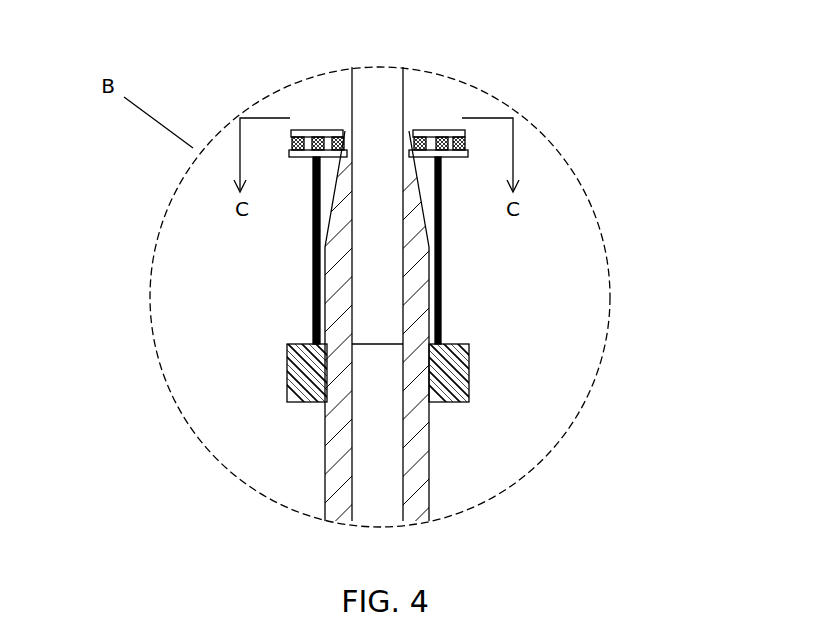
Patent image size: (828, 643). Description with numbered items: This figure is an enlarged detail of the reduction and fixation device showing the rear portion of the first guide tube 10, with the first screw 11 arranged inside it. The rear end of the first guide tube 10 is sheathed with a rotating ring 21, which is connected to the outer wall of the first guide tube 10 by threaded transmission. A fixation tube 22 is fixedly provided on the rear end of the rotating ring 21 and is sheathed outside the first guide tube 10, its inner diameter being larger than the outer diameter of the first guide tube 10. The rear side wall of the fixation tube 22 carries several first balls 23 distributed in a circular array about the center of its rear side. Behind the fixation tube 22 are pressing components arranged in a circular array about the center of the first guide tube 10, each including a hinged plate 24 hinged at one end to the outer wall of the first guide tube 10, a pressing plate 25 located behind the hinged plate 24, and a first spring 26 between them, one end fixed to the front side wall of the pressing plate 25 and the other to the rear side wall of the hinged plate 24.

The first guide tube 10 is at (413, 278).
The first screw 11 is at (375, 303).
The rotating ring 21 is at (455, 382).
The fixation tube 22 is at (442, 307).
The first balls 23 is at (344, 152).
The hinged plate 24 is at (443, 133).
The pressing plate 25 is at (427, 131).
The first spring 26 is at (411, 152).